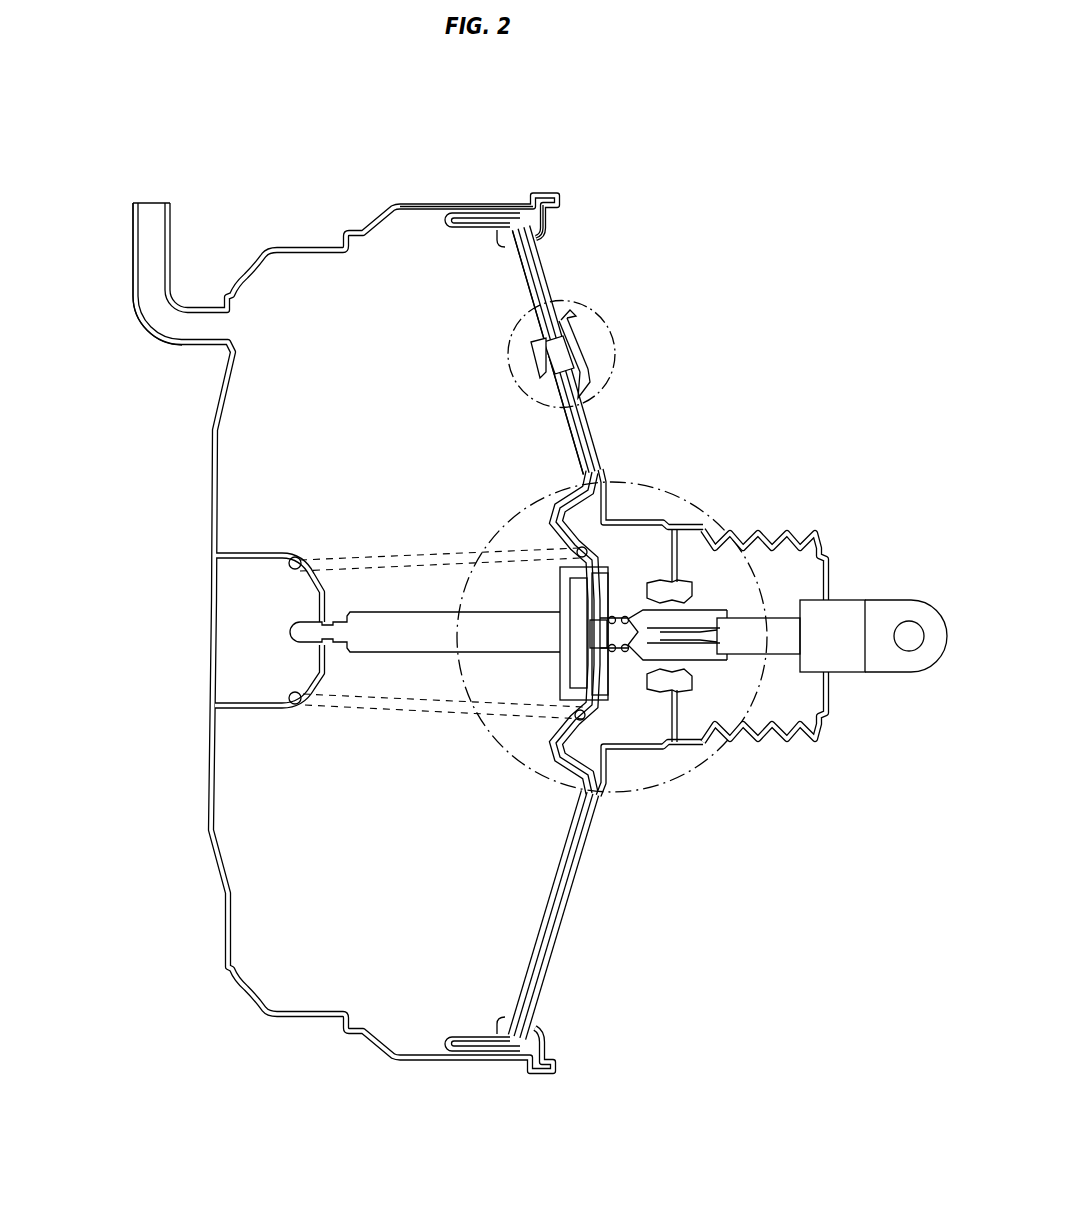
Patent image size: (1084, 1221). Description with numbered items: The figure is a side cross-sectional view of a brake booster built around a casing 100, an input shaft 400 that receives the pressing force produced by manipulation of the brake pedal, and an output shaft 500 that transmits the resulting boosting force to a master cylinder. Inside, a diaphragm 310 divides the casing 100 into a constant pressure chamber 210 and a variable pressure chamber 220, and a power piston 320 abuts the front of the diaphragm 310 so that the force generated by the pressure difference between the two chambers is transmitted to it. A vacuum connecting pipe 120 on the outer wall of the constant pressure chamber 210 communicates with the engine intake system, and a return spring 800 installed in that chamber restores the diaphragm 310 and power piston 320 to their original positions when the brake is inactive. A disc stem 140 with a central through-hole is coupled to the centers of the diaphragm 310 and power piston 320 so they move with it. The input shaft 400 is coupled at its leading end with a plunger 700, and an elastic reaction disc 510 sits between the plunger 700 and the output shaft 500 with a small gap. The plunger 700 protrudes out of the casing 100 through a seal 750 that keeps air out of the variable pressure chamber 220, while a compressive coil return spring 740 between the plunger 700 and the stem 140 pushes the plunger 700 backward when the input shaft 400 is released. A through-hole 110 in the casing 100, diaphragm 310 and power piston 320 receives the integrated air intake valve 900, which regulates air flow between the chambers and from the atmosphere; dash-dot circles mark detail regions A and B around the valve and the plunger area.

The casing 100 is at (500, 185).
The through-hole 110 is at (585, 330).
The vacuum connecting pipe 120 is at (133, 253).
The disc stem 140 is at (603, 665).
The constant pressure chamber 210 is at (349, 456).
The variable pressure chamber 220 is at (590, 508).
The diaphragm 310 is at (542, 263).
The power piston 320 is at (530, 303).
The input shaft 400 is at (878, 610).
The output shaft 500 is at (300, 627).
The reaction disc 510 is at (580, 673).
The plunger 700 is at (747, 715).
The return spring 740 is at (672, 690).
The seal 750 is at (685, 590).
The return spring 800 is at (357, 555).
The air intake valve 900 is at (588, 350).
The detail region A is at (600, 320).
The detail region B is at (758, 575).